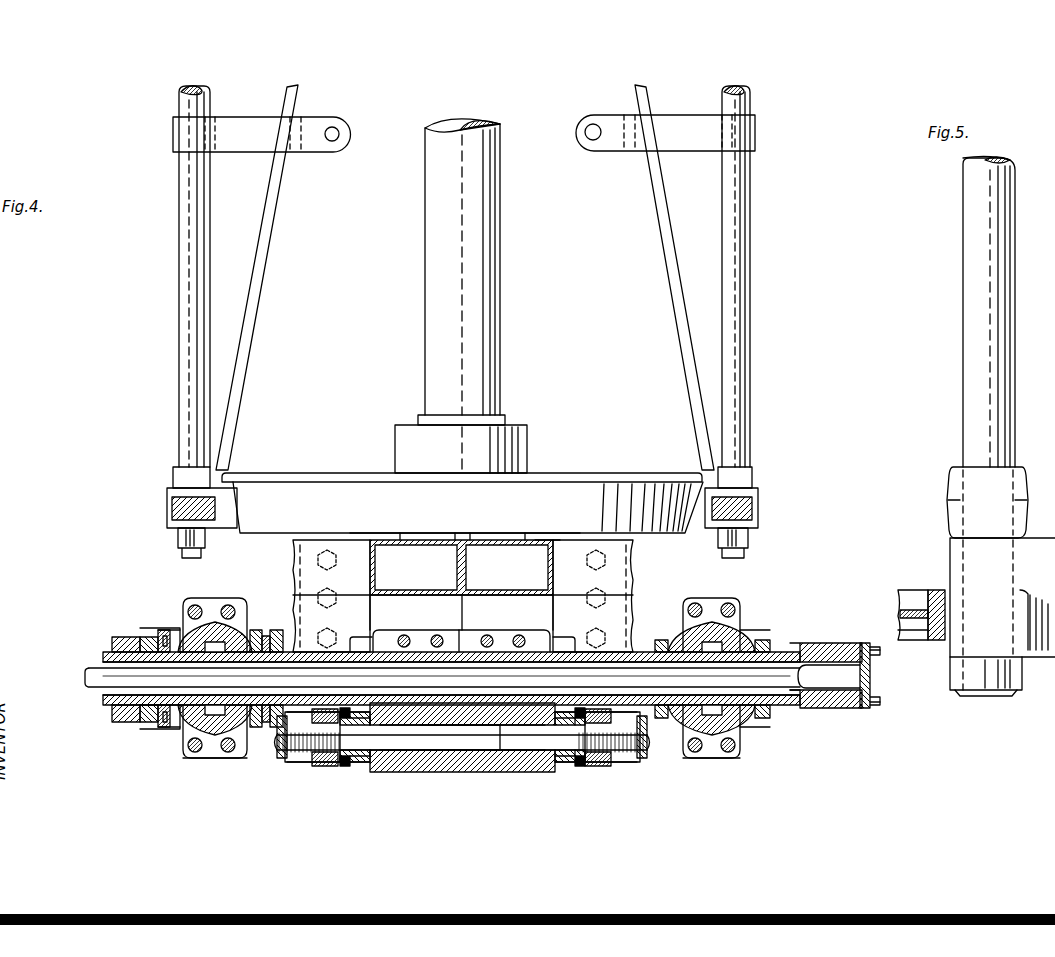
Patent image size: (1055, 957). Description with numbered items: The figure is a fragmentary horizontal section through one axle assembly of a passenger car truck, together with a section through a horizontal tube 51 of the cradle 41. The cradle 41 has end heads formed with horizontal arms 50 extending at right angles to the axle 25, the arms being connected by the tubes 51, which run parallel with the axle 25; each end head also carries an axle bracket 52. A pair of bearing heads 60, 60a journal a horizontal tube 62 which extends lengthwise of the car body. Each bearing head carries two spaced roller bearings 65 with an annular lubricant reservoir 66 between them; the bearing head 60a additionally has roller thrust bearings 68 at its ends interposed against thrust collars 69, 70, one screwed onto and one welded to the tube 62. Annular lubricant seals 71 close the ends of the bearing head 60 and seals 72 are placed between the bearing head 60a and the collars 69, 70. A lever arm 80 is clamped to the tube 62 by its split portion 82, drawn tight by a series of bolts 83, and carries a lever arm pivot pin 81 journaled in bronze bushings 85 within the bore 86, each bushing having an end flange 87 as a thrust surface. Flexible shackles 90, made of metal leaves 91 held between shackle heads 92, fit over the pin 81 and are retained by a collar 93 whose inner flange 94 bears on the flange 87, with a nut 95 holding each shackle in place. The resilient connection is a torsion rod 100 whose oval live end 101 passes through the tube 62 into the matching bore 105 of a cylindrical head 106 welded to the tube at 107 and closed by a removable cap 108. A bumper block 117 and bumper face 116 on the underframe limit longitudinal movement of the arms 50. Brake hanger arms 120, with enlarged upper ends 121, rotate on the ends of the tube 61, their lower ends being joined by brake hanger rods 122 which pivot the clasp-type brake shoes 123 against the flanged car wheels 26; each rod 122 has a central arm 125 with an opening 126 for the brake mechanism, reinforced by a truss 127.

In FIG. 4, the axle 25 is at (484, 100).
In FIG. 4, the flanged car wheel 26 is at (465, 515).
In FIG. 4, the cradle 41 is at (391, 529).
In FIG. 5, the horizontal arm 50 is at (962, 548).
In FIG. 5, the horizontal tube 51 is at (972, 190).
In FIG. 4, the axle bracket 52 is at (540, 540).
In FIG. 4, the bearing head 60 is at (720, 758).
In FIG. 4, the bearing head 60a is at (210, 758).
In FIG. 4, the horizontal tube 61 is at (226, 604).
In FIG. 4, the horizontal tube 62 is at (612, 650).
In FIG. 4, the roller bearing 65 is at (182, 730).
In FIG. 4, the annular lubricant reservoir 66 is at (240, 622).
In FIG. 4, the roller thrust bearing 68 is at (140, 724).
In FIG. 4, the thrust collar 69 is at (140, 640).
In FIG. 4, the thrust collar 70 is at (272, 628).
In FIG. 4, the annular lubricant seal 71 is at (762, 640).
In FIG. 4, the annular lubricant seal 72 is at (160, 728).
In FIG. 4, the lever arm 80 is at (476, 772).
In FIG. 4, the lever arm pivot pin 81 is at (448, 752).
In FIG. 4, the split or bifurcated portion 82 is at (496, 638).
In FIG. 4, the bolt 83 is at (437, 636).
In FIG. 4, the bronze bushing 85 is at (412, 760).
In FIG. 4, the bore 86 is at (500, 752).
In FIG. 4, the annular end flange 87 is at (388, 764).
In FIG. 4, the flexible shackle 90 is at (314, 770).
In FIG. 4, the metal leaf 91 is at (328, 768).
In FIG. 4, the shackle head 92 is at (340, 765).
In FIG. 4, the collar 93 is at (282, 760).
In FIG. 4, the inner annular flange 94 is at (358, 762).
In FIG. 4, the nut 95 is at (296, 762).
In FIG. 4, the torsion rod 100 is at (86, 662).
In FIG. 4, the live end 101 is at (829, 676).
In FIG. 4, the bore 105 is at (878, 654).
In FIG. 4, the cylindrical head 106 is at (848, 632).
In FIG. 4, the weld 107 is at (792, 700).
In FIG. 4, the removable cap 108 is at (878, 700).
In FIG. 5, the bumper face 116 is at (938, 630).
In FIG. 5, the bumper block 117 is at (934, 592).
In FIG. 4, the brake hanger arm 120 is at (167, 510).
In FIG. 5, the enlarged upper end 121 is at (962, 484).
In FIG. 4, the brake hanger rod 122 is at (181, 270).
In FIG. 4, the brake shoe 123 is at (234, 500).
In FIG. 4, the arm 125 is at (236, 146).
In FIG. 4, the opening 126 is at (332, 145).
In FIG. 4, the truss 127 is at (256, 318).